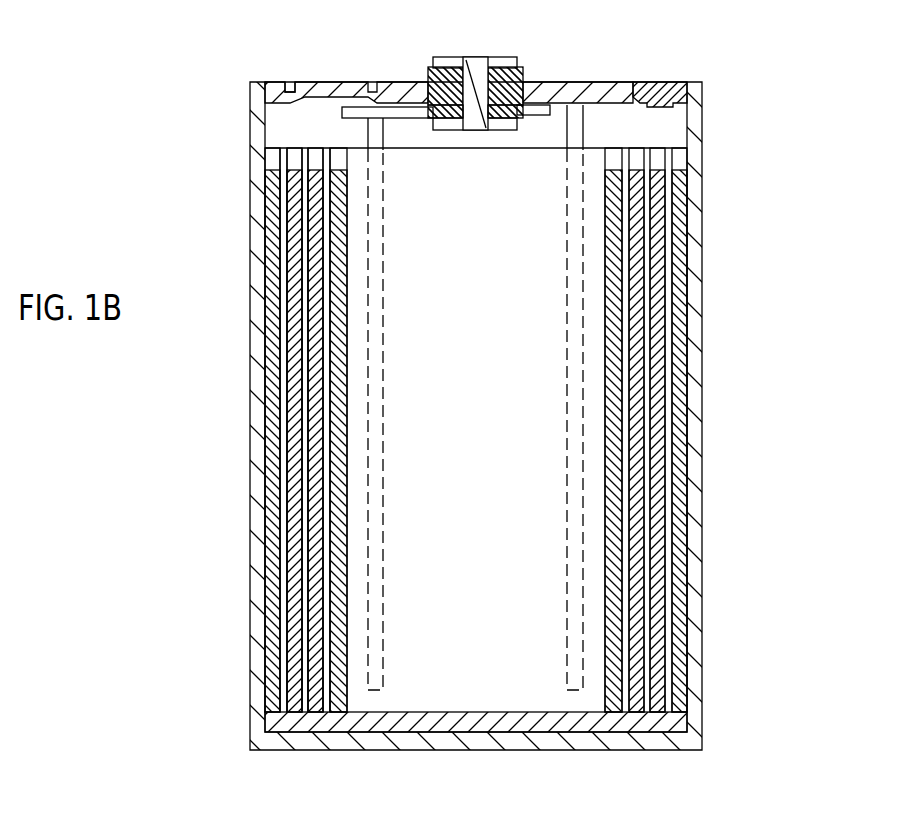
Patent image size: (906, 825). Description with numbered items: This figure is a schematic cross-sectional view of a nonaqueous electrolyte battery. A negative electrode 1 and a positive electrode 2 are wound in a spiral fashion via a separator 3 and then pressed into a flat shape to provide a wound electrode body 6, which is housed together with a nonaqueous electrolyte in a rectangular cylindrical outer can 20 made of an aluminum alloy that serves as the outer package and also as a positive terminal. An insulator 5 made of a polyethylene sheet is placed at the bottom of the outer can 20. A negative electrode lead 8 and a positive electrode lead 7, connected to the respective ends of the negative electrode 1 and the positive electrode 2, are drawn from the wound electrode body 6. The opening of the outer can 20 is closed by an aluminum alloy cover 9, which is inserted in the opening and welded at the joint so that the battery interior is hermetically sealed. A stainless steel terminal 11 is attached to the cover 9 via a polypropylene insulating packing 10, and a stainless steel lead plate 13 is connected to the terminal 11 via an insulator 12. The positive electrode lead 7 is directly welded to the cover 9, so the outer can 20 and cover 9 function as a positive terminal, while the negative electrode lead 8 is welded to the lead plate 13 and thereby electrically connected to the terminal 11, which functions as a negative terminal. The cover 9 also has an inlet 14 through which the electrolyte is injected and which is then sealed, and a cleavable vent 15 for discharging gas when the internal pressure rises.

The negative electrode 1 is at (300, 455).
The positive electrode 2 is at (270, 352).
The separator 3 is at (285, 405).
The insulator 5 is at (470, 725).
The wound electrode body 6 is at (430, 258).
The positive electrode lead 7 is at (577, 130).
The negative electrode lead 8 is at (377, 132).
The cover 9 is at (610, 82).
The insulating packing 10 is at (527, 73).
The terminal 11 is at (480, 70).
The insulator 12 is at (415, 104).
The lead plate 13 is at (402, 107).
The inlet 14 is at (660, 88).
The cleavable vent 15 is at (340, 82).
The outer can 20 is at (695, 430).